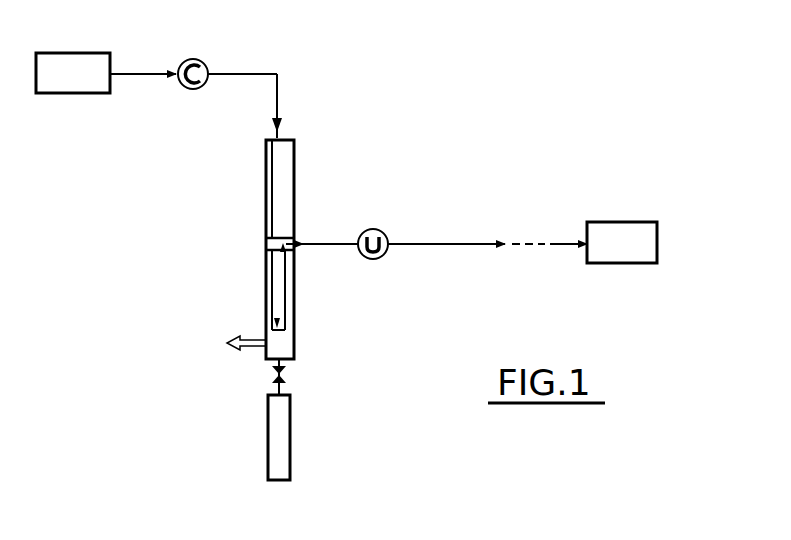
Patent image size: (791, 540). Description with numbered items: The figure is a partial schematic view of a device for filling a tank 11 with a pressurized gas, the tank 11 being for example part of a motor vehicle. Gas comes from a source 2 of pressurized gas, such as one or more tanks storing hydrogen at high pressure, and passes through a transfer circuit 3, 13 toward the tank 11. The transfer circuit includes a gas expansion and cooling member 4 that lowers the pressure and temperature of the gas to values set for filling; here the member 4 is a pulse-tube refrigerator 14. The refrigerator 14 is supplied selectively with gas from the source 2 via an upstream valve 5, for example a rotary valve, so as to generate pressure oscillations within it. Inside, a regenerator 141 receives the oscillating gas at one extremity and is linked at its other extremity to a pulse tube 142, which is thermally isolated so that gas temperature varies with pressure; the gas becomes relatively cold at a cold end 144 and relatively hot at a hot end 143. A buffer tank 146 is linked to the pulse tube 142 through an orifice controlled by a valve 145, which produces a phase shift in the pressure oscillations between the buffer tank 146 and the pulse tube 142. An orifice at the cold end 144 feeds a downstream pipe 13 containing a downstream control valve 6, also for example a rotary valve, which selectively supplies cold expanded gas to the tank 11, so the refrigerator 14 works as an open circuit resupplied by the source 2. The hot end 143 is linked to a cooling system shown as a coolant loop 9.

The source of pressurized gas 2 is at (62, 95).
The transfer circuit 3 is at (244, 70).
The gas expansion and cooling member 4 is at (326, 170).
The upstream valve 5 is at (190, 59).
The downstream control valve 6 is at (373, 229).
The coolant loop 9 is at (236, 343).
The tank 11 is at (645, 228).
The downstream pipe 13 is at (427, 250).
The pulse-tube refrigerator 14 is at (263, 237).
The regenerator 141 is at (263, 141).
The pulse tube 142 is at (298, 245).
The hot end 143 is at (262, 357).
The cold end 144 is at (262, 250).
The valve 145 is at (290, 376).
The buffer tank 146 is at (290, 432).